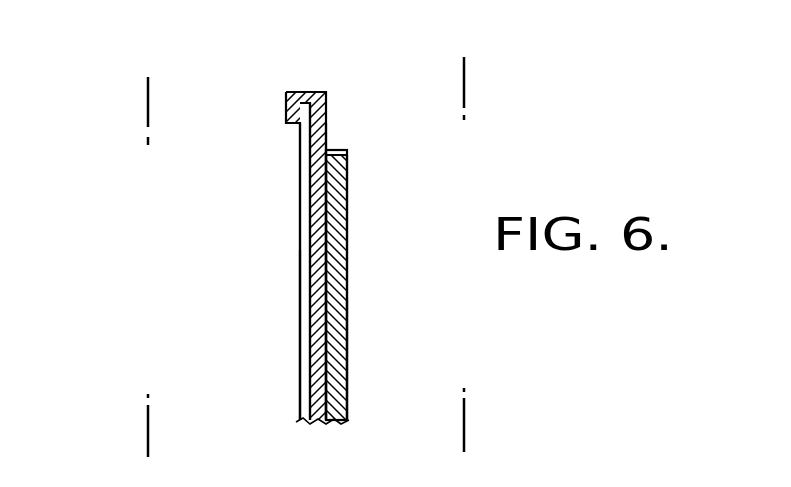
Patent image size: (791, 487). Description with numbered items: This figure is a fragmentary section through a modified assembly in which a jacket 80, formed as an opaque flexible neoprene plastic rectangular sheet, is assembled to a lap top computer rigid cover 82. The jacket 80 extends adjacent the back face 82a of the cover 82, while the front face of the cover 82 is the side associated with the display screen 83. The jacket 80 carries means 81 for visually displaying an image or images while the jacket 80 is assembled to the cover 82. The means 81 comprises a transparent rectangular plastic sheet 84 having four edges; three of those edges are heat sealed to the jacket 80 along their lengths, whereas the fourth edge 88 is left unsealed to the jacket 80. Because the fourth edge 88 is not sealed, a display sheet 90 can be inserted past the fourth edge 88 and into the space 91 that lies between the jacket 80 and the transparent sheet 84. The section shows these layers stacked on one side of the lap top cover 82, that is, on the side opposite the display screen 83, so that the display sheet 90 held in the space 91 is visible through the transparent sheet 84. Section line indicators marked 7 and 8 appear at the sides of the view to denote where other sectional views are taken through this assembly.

The jacket 80 is at (338, 90).
The means for visually displaying an image 81 is at (356, 309).
The lap top computer rigid cover 82 is at (290, 215).
The back face 82a is at (323, 343).
The display screen 83 is at (300, 310).
The transparent rectangular plastic sheet 84 is at (347, 385).
The fourth edge 88 is at (345, 150).
The display sheet 90 is at (328, 252).
The space 91 is at (332, 210).
The section line 7- 7 is at (473, 72).
The section line 8- 8 is at (140, 95).